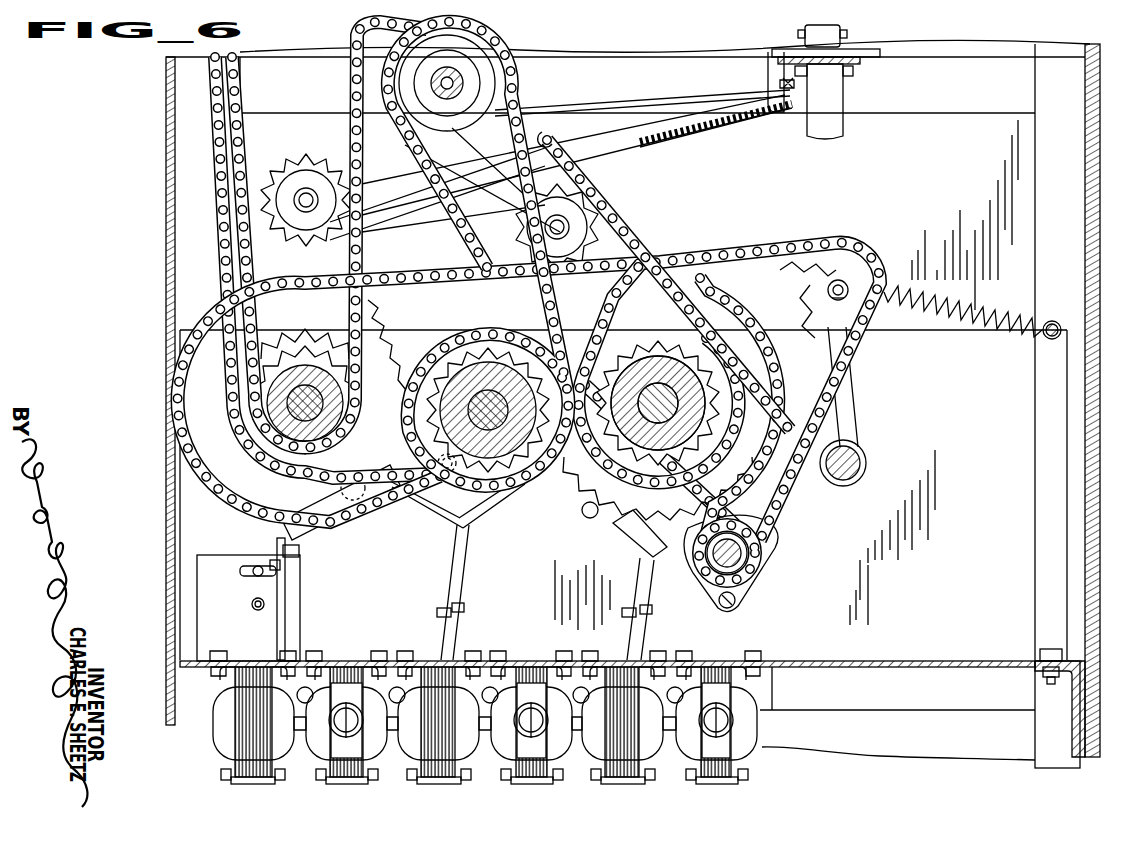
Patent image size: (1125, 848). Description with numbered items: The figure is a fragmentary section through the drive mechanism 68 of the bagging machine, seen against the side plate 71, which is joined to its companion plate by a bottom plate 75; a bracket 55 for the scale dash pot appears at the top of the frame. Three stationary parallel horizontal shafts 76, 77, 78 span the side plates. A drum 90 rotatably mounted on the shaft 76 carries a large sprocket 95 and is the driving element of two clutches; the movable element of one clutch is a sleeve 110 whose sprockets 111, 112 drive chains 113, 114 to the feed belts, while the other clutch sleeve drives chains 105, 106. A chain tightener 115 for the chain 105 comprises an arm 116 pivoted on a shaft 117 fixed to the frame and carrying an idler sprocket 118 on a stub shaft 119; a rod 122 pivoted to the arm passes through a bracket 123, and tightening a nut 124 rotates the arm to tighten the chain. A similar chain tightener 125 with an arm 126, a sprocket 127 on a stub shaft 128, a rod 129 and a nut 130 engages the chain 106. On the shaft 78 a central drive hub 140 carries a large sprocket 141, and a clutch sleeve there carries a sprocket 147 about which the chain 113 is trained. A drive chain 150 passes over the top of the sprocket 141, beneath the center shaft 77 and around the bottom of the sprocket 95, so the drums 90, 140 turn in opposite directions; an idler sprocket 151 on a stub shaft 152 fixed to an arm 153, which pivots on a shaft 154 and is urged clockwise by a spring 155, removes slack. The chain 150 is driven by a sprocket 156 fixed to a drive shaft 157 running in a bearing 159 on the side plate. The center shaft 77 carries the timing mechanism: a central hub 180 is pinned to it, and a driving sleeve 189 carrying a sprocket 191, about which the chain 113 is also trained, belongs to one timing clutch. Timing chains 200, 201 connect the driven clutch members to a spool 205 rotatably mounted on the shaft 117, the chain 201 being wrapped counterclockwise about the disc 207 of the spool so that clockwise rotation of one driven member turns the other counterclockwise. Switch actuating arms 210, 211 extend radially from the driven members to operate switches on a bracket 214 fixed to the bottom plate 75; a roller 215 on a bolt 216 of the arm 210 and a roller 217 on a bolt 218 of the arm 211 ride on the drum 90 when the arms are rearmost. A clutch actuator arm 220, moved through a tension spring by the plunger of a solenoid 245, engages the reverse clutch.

The bracket 55 is at (778, 112).
The drive mechanism 68 is at (195, 307).
The side plate 71 is at (995, 465).
The bottom plate 75 is at (933, 660).
The shaft 76 is at (392, 330).
The center shaft 77 is at (495, 412).
The shaft 78 is at (662, 400).
The drum 90 is at (392, 335).
The large sprocket 95 is at (390, 310).
The drive chain 105 is at (228, 265).
The drive chain 106 is at (350, 95).
The sleeve 110 is at (262, 300).
The sprocket 111 is at (306, 297).
The sprocket 112 is at (330, 370).
The chain 113 is at (240, 470).
The chain 114 is at (395, 240).
The chain tightener 115 is at (544, 227).
The arm 116 is at (482, 180).
The shaft 117 is at (447, 83).
The idler sprocket 118 is at (575, 160).
The stub shaft 119 is at (562, 228).
The rod 122 is at (620, 182).
The bracket 123 is at (782, 82).
The nut 124 is at (785, 98).
The chain tightener 125 is at (330, 143).
The arm 126 is at (329, 235).
The sprocket 127 is at (298, 203).
The stub shaft 128 is at (305, 205).
The rod 129 is at (625, 130).
The nut 130 is at (801, 104).
The central drive hub 140 is at (613, 344).
The large sprocket 141 is at (658, 488).
The sprocket 147 is at (608, 480).
The drive chain 150 is at (753, 242).
The idler sprocket 151 is at (792, 270).
The stub shaft 152 is at (815, 294).
The arm 153 is at (850, 395).
The shaft 154 is at (852, 458).
The spring 155 is at (960, 330).
The sprocket 156 is at (735, 552).
The drive shaft 157 is at (735, 561).
The bearing 159 is at (767, 563).
The central hub 180 is at (458, 463).
The sleeve 189 is at (495, 406).
The sprocket 191 is at (432, 468).
The timing chain 200 is at (453, 26).
The timing chain 201 is at (510, 495).
The spool 205 is at (414, 42).
The disc 207 is at (490, 94).
The switch actuating arm 210 is at (688, 570).
The switch actuating arm 211 is at (290, 517).
The bracket 214 is at (248, 608).
The roller 215 is at (586, 514).
The bolt 216 is at (612, 528).
The roller 217 is at (342, 530).
The bolt 218 is at (358, 495).
The clutch actuator arm 220 is at (275, 545).
The solenoid 245 is at (222, 717).